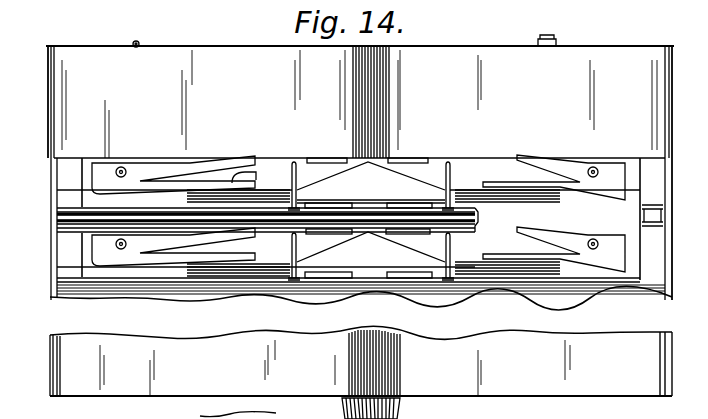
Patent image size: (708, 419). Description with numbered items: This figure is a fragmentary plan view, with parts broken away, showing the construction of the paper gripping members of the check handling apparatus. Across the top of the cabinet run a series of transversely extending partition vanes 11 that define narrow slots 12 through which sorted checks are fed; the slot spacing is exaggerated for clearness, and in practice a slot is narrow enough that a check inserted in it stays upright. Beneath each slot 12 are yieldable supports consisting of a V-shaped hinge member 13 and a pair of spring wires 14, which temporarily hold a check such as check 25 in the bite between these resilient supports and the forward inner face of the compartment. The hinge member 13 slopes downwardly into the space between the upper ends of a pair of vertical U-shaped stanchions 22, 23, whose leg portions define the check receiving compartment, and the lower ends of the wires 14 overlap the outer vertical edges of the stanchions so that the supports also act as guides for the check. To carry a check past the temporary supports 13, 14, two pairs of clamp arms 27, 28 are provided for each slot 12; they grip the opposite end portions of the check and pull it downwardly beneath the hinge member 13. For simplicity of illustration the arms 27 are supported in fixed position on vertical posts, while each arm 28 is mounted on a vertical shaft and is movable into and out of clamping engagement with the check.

The partition vane 11 is at (65, 285).
The slot 12 is at (82, 388).
The hinge member 13 is at (378, 172).
The spring wires 14 is at (297, 160).
The U-shaped stanchion 22 is at (332, 157).
The U-shaped stanchion 23 is at (428, 158).
The check 25 is at (207, 278).
The fixed clamp arm 27 is at (245, 178).
The movable clamp arm 28 is at (258, 148).